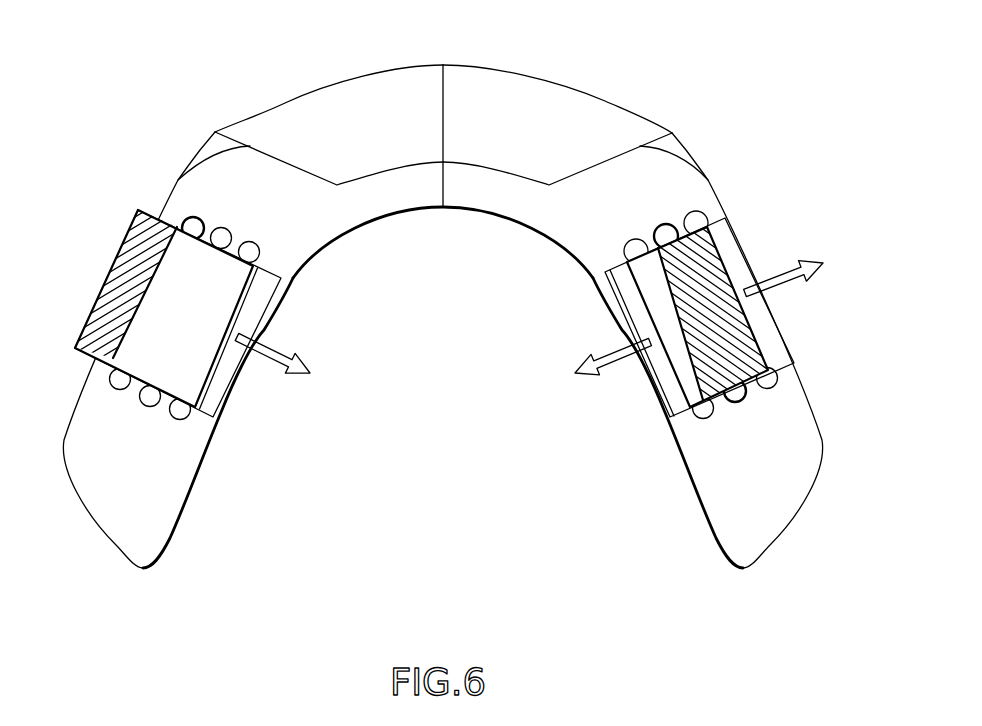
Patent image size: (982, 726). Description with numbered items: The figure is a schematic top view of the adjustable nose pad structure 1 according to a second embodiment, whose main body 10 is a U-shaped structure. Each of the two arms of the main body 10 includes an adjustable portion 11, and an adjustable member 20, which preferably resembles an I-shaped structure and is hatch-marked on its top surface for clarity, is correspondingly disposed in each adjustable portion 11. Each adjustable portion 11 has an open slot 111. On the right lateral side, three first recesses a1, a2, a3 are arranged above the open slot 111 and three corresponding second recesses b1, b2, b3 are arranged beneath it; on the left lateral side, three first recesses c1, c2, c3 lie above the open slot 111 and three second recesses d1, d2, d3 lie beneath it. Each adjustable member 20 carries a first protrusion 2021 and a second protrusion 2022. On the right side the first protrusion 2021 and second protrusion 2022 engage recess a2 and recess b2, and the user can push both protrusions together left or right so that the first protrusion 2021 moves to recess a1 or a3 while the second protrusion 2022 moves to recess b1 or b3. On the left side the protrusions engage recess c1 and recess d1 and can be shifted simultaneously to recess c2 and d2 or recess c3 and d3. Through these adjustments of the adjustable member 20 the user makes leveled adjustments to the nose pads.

The mouthguard 1 is at (440, 289).
The main body 10 is at (520, 105).
The adjustable portion 11 is at (171, 159).
The adjustable member 20 is at (440, 312).
The open slot 111 is at (220, 382).
The first protrusion 2021 is at (165, 247).
The second protrusion 2022 is at (120, 362).
The first recess a1 is at (625, 248).
The first recess a2 is at (653, 228).
The first recess a3 is at (687, 220).
The second recess b1 is at (710, 417).
The second recess b2 is at (742, 407).
The second recess b3 is at (767, 393).
The first recess c1 is at (260, 247).
The first recess c2 is at (230, 233).
The first recess c3 is at (197, 220).
The second recess d1 is at (174, 418).
The second recess d2 is at (143, 410).
The second recess d3 is at (117, 393).